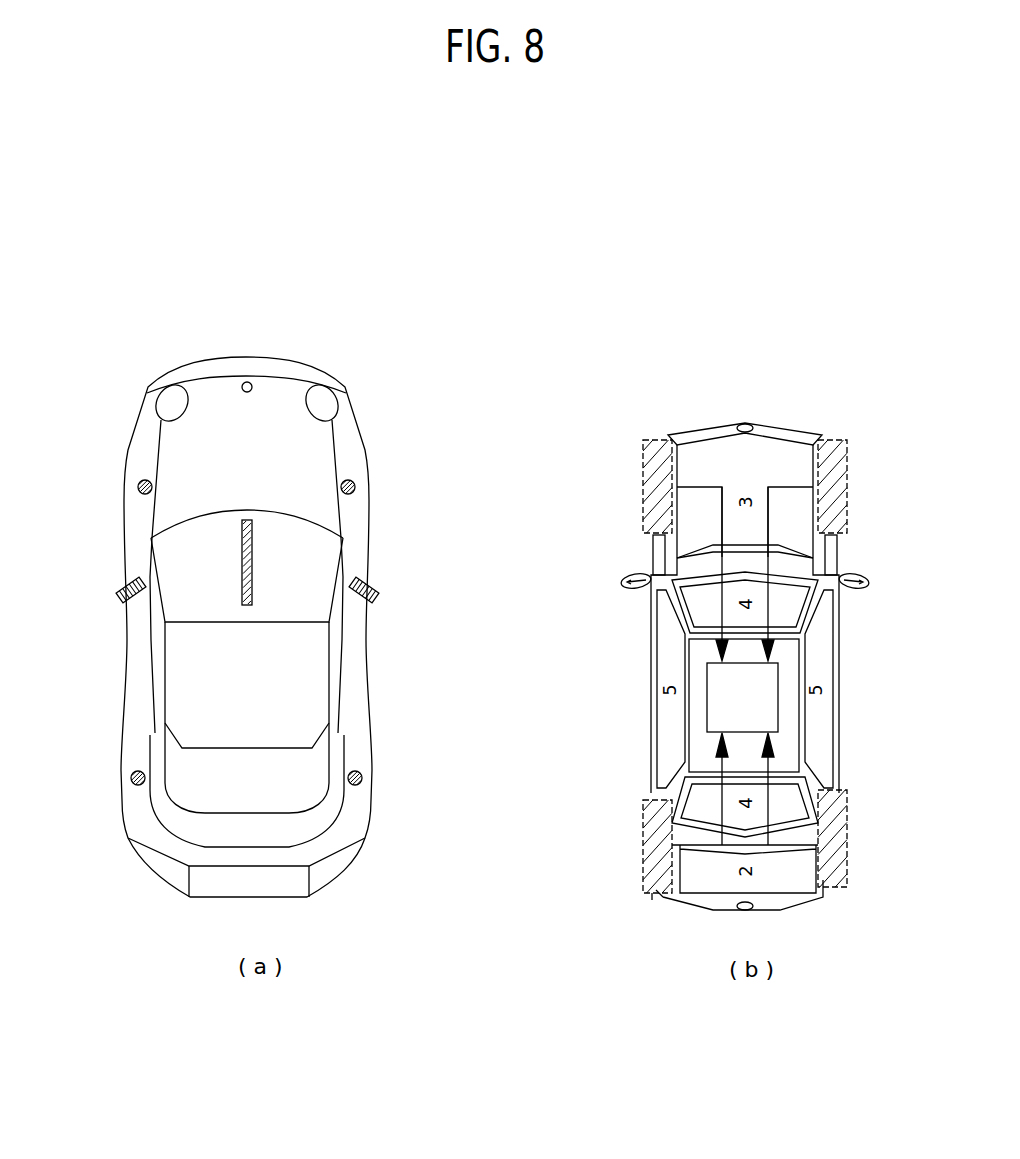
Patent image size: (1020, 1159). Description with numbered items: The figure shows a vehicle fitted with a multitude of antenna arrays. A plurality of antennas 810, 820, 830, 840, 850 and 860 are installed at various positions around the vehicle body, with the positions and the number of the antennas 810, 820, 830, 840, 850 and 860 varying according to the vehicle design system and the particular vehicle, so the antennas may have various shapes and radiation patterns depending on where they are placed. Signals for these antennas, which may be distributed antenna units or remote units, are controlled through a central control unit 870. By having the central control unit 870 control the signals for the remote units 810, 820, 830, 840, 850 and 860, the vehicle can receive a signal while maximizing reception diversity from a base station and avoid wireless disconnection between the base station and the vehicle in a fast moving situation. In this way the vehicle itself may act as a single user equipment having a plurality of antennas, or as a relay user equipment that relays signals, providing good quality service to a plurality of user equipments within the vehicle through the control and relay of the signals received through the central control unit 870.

The antenna 810 is at (355, 487).
The antenna 820 is at (374, 590).
The antenna 830 is at (362, 778).
The antenna 840 is at (139, 487).
The antenna 850 is at (118, 590).
The antenna 860 is at (132, 778).
The central control unit 870 is at (254, 562).